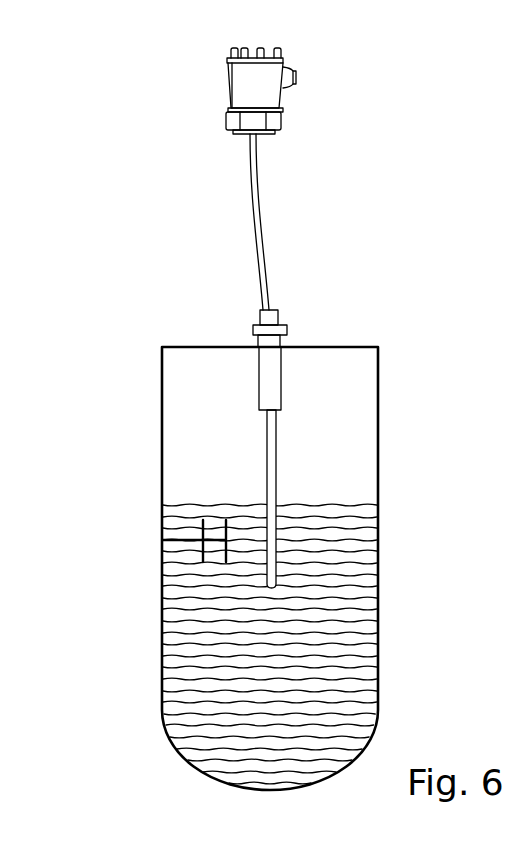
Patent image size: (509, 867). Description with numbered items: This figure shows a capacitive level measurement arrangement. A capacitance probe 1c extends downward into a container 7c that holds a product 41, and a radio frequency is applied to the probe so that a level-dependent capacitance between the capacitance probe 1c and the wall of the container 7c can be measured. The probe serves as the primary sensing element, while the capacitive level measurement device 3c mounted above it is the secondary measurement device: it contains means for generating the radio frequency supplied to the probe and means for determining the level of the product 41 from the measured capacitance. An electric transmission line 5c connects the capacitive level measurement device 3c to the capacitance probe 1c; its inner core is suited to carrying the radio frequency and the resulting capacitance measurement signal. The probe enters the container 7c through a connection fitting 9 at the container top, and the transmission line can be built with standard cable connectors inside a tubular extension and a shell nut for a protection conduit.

The capacitive level measurement device 3c is at (229, 86).
The electric transmission line 5c is at (255, 212).
The container 7c is at (173, 345).
The process connection fitting 9 is at (256, 332).
The capacitance probe 1c is at (265, 449).
The product 41 is at (207, 670).